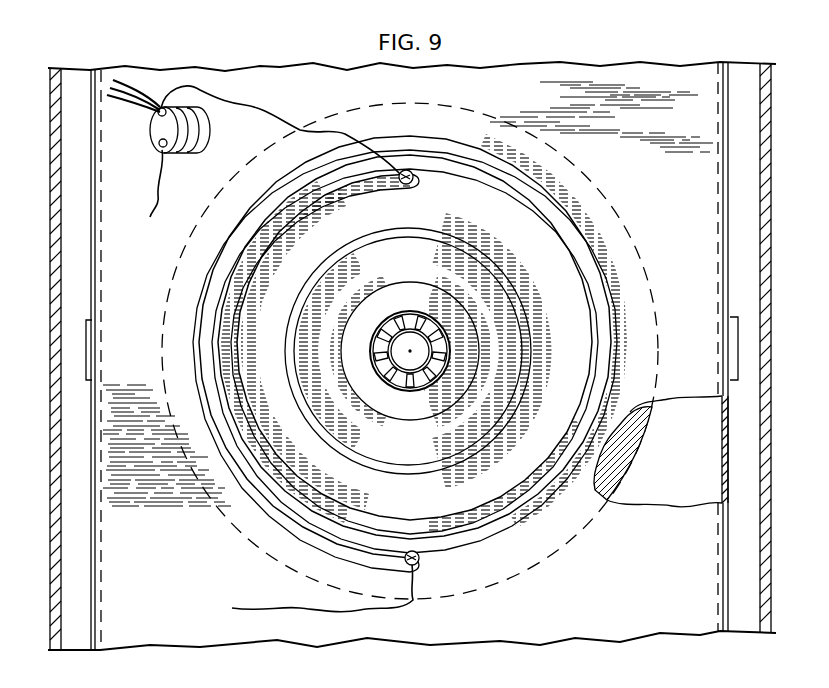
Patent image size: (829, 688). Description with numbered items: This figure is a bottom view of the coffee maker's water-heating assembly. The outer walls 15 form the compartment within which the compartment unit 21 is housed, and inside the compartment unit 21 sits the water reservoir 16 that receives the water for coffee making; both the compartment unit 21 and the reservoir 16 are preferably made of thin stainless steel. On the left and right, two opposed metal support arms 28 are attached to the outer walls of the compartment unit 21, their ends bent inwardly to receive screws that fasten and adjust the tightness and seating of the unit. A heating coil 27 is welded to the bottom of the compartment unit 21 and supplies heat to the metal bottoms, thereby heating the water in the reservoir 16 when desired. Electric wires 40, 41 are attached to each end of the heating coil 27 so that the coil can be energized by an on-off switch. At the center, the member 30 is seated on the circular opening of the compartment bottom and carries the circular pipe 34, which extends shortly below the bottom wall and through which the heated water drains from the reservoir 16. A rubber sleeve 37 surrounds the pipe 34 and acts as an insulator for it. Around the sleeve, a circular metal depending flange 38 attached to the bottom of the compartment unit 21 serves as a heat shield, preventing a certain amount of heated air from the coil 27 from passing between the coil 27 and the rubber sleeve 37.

The walls 15 is at (52, 189).
The compartment unit 21 is at (92, 273).
The metal support arms 28 is at (90, 351).
The heating coil 27 is at (556, 200).
The electric wire 40 is at (283, 122).
The electric wire 41 is at (283, 610).
The circular metal depending flange 38 is at (473, 250).
The member 30 is at (470, 318).
The rubber sleeve 37 is at (437, 373).
The circular pipe 34 is at (408, 370).
The water reservoir 16 is at (618, 466).